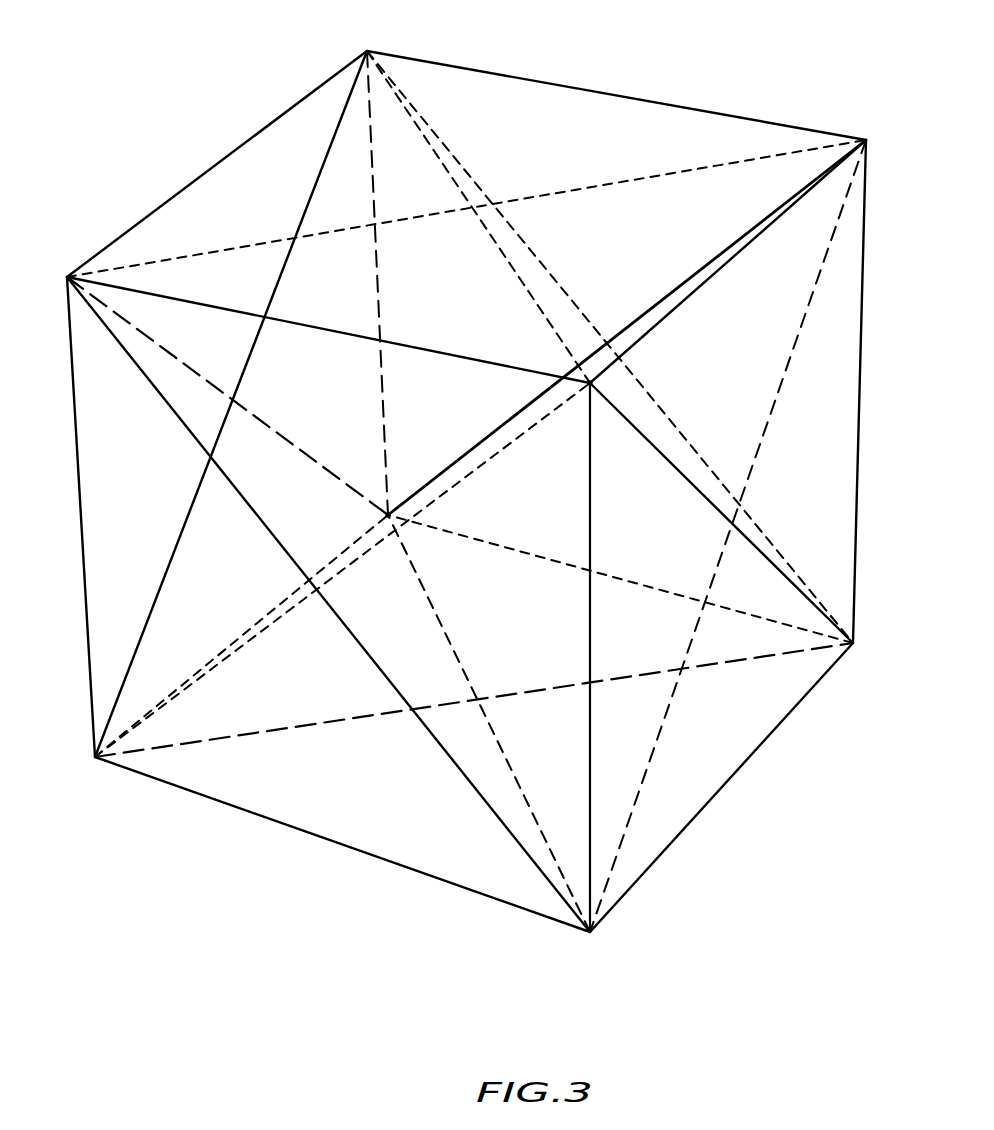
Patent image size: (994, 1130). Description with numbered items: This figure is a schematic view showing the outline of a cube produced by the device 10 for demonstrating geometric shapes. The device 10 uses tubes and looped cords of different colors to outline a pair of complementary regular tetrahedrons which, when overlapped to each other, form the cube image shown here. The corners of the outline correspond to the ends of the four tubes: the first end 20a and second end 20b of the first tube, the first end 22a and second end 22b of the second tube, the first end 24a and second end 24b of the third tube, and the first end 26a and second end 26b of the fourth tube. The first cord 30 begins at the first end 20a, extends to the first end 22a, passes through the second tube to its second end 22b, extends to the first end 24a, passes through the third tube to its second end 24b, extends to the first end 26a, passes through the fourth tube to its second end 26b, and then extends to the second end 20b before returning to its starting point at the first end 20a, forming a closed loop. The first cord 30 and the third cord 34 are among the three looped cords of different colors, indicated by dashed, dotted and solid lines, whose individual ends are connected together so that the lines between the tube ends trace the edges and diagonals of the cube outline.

The device 10 is at (607, 76).
The first end of first tube 20a is at (637, 308).
The second end of first tube 20b is at (460, 594).
The first end of second tube 22a is at (315, 577).
The second end of second tube 22b is at (649, 526).
The first end of third tube 24a is at (474, 387).
The second end of third tube 24b is at (506, 676).
The first end of fourth tube 26a is at (387, 512).
The second end of fourth tube 26b is at (591, 388).
The first cord 30 is at (603, 186).
The third cord 34 is at (782, 383).